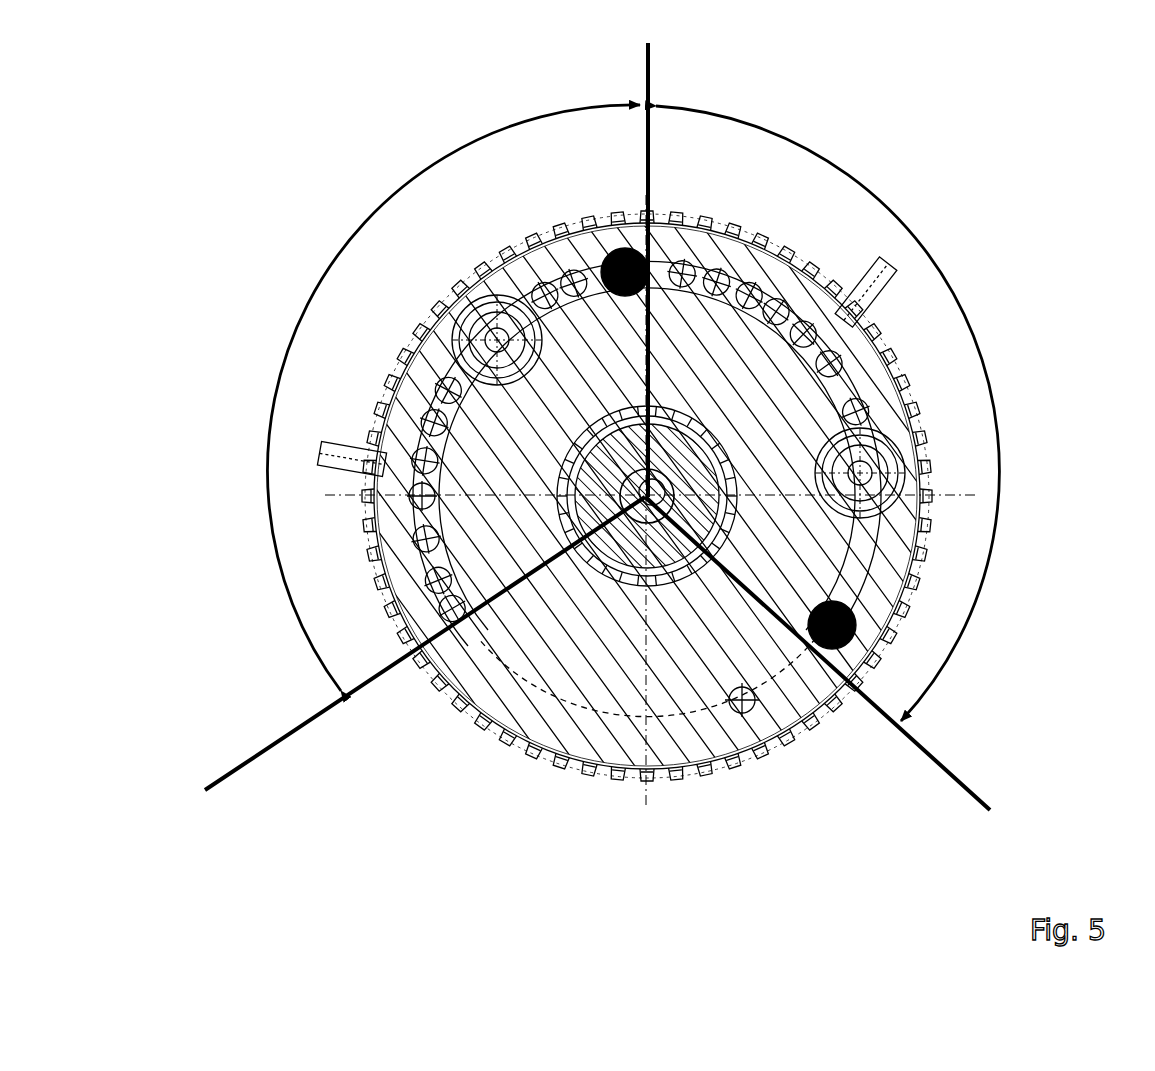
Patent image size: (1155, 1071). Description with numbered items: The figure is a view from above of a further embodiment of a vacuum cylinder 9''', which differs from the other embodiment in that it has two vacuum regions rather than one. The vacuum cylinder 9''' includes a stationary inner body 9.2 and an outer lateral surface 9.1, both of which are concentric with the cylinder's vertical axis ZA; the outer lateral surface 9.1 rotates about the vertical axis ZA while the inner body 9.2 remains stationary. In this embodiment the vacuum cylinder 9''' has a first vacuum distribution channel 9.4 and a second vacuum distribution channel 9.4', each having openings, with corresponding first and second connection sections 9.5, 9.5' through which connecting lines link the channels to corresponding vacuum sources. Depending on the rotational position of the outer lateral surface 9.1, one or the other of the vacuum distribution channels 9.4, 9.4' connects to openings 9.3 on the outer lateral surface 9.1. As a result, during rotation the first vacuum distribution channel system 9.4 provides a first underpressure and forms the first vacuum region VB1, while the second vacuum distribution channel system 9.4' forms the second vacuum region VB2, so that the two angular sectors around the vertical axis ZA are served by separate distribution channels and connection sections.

The vacuum cylinder 9''' is at (636, 463).
The outer lateral surface 9.1 is at (527, 747).
The stationary inner body 9.2 is at (528, 627).
The openings 9.3 is at (762, 295).
The first vacuum distribution channel 9.4 is at (332, 507).
The second vacuum distribution channel 9.4' is at (976, 411).
The first connection section 9.5 is at (362, 353).
The second connection section 9.5' is at (966, 539).
The vertical axis ZA is at (648, 512).
The first vacuum region VB1 is at (445, 146).
The second vacuum region VB2 is at (965, 312).